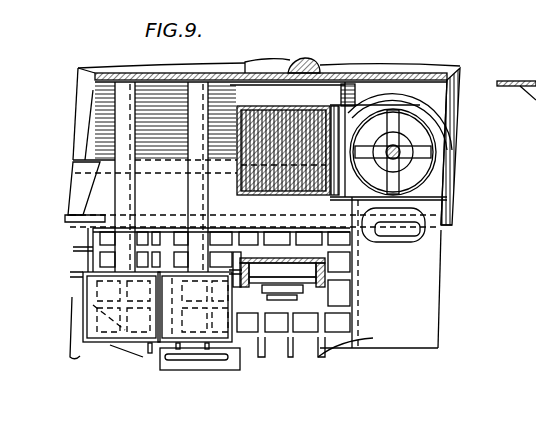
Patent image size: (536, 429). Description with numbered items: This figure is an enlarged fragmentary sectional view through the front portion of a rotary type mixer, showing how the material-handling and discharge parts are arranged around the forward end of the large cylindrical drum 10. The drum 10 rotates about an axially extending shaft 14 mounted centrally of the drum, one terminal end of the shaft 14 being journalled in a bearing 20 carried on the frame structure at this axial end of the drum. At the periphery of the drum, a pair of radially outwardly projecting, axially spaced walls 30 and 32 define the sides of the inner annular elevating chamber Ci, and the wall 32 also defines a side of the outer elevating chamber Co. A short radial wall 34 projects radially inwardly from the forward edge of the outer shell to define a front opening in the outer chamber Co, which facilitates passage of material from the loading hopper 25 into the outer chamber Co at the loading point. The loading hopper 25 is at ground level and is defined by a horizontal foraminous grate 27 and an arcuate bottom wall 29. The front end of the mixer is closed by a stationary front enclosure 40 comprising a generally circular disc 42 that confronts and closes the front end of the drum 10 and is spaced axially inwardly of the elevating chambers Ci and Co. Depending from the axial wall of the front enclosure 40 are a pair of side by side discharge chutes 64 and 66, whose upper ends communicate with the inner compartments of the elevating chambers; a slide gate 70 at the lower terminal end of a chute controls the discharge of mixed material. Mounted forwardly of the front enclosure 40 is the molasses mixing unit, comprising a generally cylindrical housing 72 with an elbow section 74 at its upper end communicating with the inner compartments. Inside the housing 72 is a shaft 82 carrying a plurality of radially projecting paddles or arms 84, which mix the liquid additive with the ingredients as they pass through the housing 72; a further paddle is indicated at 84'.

The cylindrical drum 10 is at (411, 72).
The shaft 14 is at (320, 63).
The bearing 20 is at (327, 275).
The loading hopper 25 is at (362, 295).
The foraminous grate 27 is at (335, 323).
The arcuate bottom wall 29 is at (516, 113).
The axially spaced wall 30 is at (80, 88).
The axially spaced wall 32 is at (252, 194).
The short radial wall 34 is at (442, 226).
The stationary front enclosure 40 is at (430, 80).
The circular disc 42 is at (128, 79).
The discharge chute 64 is at (113, 346).
The discharge chute 66 is at (175, 265).
The slide gate 70 is at (242, 358).
The cylindrical housing 72 is at (488, 205).
The elbow section 74 is at (356, 105).
The shaft 82 is at (432, 170).
The paddles 84 is at (418, 122).
The fan scroll plate 84' is at (387, 219).
The inner annular elevating chamber Ci is at (448, 100).
The outer elevating chamber Co is at (450, 222).